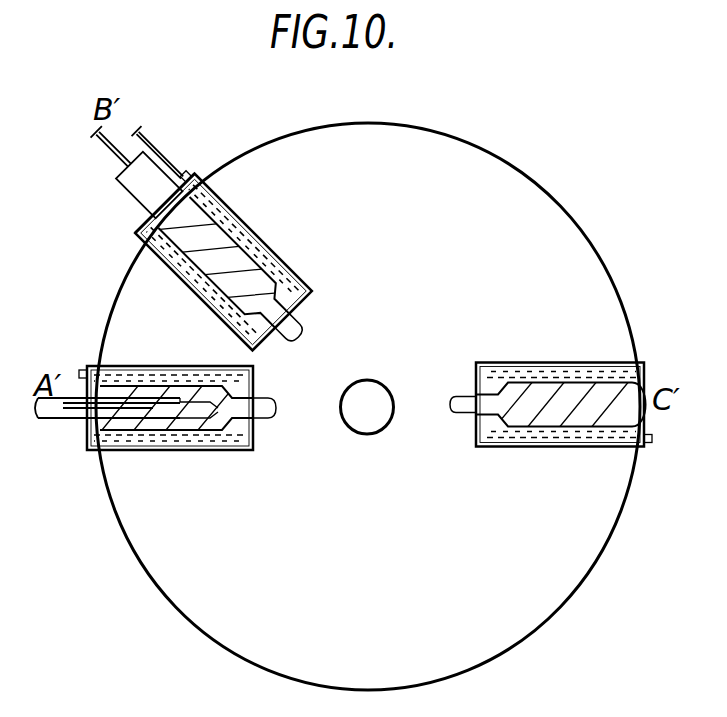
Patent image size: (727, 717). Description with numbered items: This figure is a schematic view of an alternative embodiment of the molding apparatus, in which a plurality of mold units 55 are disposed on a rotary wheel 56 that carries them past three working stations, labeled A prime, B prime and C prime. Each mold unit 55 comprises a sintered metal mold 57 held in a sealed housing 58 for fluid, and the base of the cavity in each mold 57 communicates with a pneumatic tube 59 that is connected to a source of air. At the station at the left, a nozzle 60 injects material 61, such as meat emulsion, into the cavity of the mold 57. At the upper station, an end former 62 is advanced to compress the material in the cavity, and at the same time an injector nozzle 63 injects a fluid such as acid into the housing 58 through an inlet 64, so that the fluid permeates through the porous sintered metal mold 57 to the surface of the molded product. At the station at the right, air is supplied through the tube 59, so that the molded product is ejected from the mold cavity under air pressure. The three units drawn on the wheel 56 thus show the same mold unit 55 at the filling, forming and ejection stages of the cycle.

The mold unit 55 is at (238, 206).
The rotary wheel 56 is at (514, 646).
The sintered metal mold 57 is at (292, 268).
The sealed housing 58 is at (258, 228).
The pneumatic tube 59 is at (290, 322).
The nozzle 60 is at (68, 420).
The material 61 is at (92, 429).
The end former 62 is at (110, 160).
The injector nozzle 63 is at (157, 143).
The inlet 64 is at (186, 175).